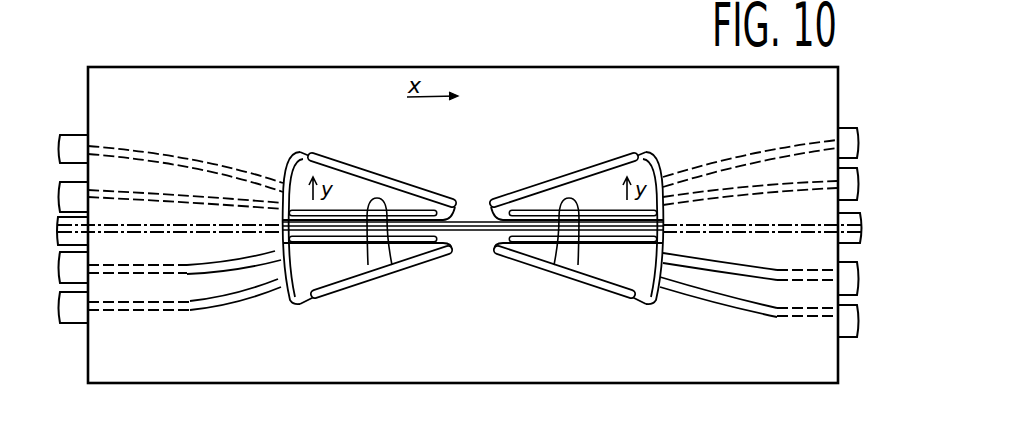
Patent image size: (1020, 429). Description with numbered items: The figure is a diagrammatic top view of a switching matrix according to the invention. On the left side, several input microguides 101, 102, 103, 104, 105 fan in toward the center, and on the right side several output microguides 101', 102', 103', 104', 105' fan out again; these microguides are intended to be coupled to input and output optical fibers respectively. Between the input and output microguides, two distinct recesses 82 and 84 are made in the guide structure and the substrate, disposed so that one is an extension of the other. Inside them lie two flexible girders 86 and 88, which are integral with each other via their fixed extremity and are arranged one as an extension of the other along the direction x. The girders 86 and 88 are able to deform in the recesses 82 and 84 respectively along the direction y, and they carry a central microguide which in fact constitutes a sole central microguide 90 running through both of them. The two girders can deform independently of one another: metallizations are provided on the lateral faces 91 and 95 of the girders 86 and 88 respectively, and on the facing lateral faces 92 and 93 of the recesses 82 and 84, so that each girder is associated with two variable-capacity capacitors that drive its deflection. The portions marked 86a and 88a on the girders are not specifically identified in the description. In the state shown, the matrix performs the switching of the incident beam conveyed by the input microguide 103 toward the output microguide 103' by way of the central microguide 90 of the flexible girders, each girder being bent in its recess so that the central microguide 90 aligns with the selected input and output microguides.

The recess 82 is at (364, 186).
The recess 84 is at (561, 193).
The flexible girder 86 is at (333, 260).
The curved rim of first connector body 86a is at (292, 168).
The flexible girder 88 is at (597, 258).
The curved rim of second connector body 88a is at (657, 177).
The central microguide 90 is at (463, 233).
The lateral face of girder 91 is at (375, 262).
The lateral face of recess 92 is at (314, 156).
The lateral face of recess 93 is at (612, 158).
The lateral face of girder 95 is at (566, 262).
The input microguide 101 is at (185, 132).
The input microguide 102 is at (185, 156).
The input microguide 103 is at (170, 289).
The input microguide 104 is at (184, 317).
The input microguide 105 is at (184, 316).
The output microguide 101' is at (750, 132).
The output microguide 102' is at (750, 157).
The output microguide 103' is at (762, 287).
The output microguide 104' is at (750, 318).
The output microguide 105' is at (749, 317).